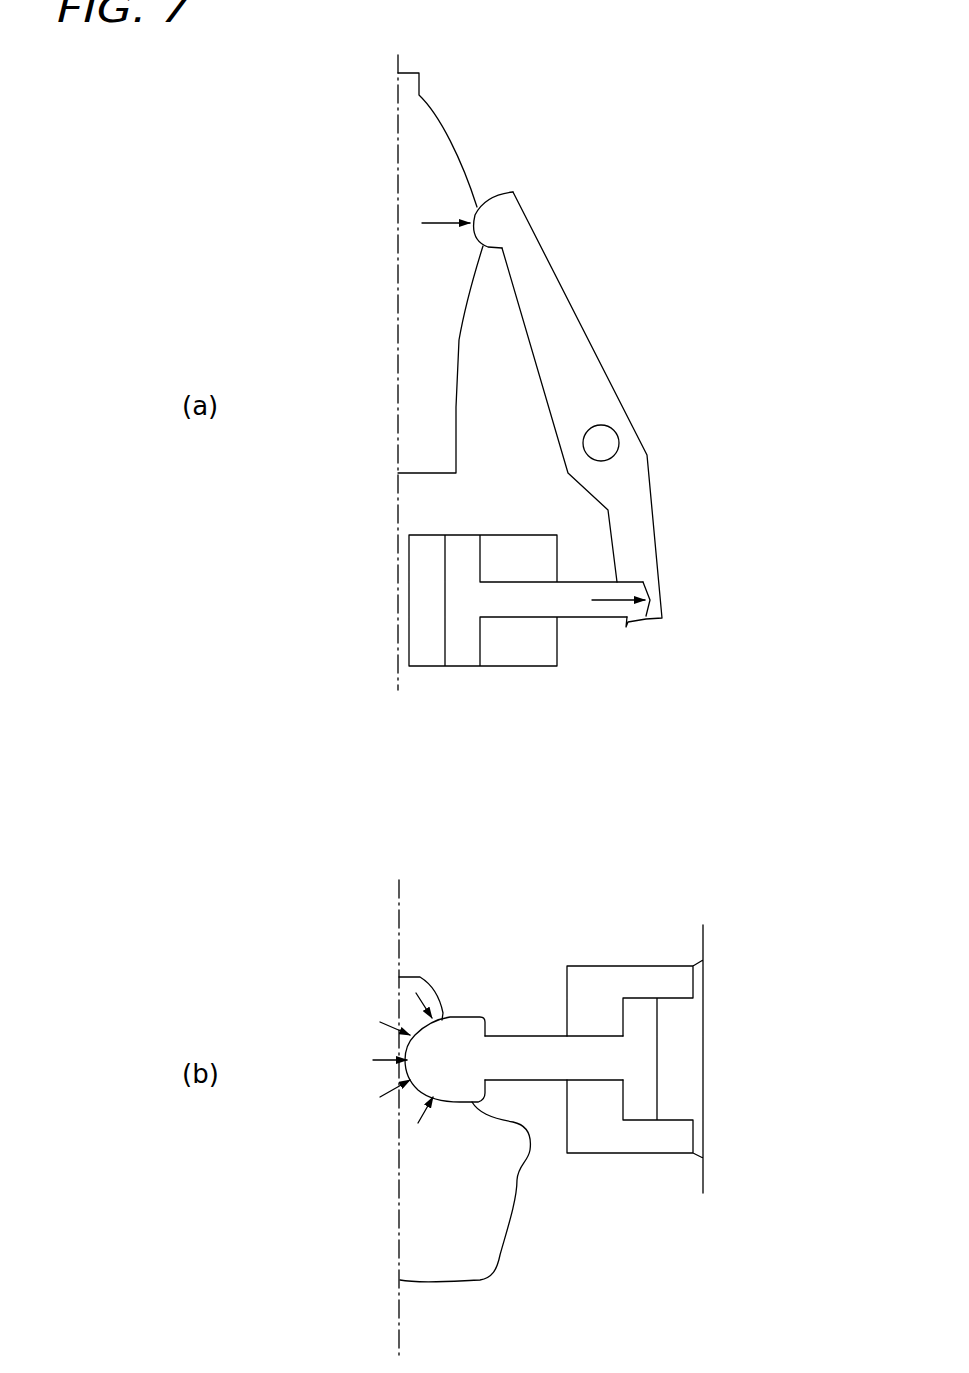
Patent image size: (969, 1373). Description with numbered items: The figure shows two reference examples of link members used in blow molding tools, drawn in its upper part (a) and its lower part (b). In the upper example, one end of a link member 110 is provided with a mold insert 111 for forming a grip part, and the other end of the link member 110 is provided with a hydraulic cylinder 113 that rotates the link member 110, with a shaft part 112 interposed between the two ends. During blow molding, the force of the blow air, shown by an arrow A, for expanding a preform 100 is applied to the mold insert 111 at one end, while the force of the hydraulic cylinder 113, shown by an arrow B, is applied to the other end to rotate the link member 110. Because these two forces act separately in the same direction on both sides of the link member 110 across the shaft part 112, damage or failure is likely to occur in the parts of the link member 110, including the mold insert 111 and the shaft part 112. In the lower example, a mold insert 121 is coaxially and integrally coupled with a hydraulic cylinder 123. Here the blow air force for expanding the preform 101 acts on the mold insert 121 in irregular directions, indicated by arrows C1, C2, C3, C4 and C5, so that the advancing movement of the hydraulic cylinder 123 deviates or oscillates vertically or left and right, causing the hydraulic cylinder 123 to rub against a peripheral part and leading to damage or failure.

The preform 100 is at (438, 135).
The preform 101 is at (487, 1222).
The link member 110 is at (624, 334).
The mold insert 111 is at (488, 202).
The shaft part 112 is at (601, 443).
The hydraulic cylinder 113 is at (532, 610).
The mold insert 121 is at (470, 1033).
The hydraulic cylinder 123 is at (597, 1037).
The arrow indicating force of blow air A is at (444, 207).
The arrow indicating force of hydraulic cylinder B is at (609, 602).
The arrow indicating blow air force direction C1 is at (408, 1000).
The arrow indicating blow air force direction C2 is at (377, 1020).
The arrow indicating blow air force direction C3 is at (374, 1060).
The arrow indicating blow air force direction C4 is at (380, 1096).
The arrow indicating blow air force direction C5 is at (418, 1126).